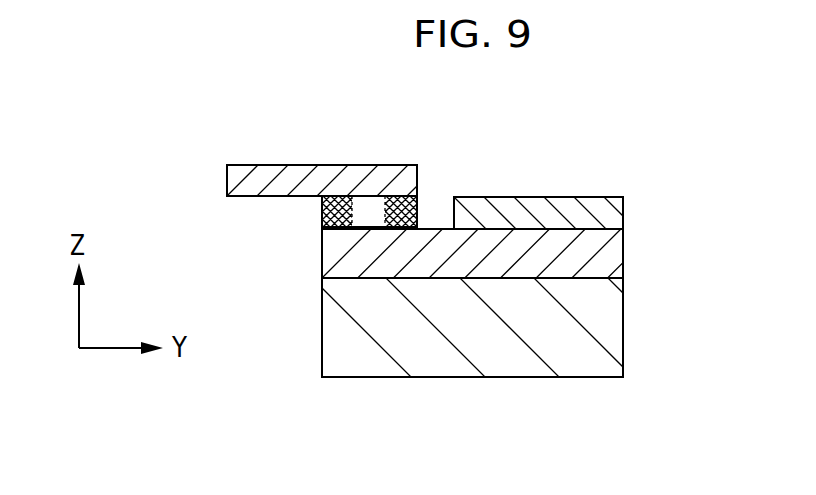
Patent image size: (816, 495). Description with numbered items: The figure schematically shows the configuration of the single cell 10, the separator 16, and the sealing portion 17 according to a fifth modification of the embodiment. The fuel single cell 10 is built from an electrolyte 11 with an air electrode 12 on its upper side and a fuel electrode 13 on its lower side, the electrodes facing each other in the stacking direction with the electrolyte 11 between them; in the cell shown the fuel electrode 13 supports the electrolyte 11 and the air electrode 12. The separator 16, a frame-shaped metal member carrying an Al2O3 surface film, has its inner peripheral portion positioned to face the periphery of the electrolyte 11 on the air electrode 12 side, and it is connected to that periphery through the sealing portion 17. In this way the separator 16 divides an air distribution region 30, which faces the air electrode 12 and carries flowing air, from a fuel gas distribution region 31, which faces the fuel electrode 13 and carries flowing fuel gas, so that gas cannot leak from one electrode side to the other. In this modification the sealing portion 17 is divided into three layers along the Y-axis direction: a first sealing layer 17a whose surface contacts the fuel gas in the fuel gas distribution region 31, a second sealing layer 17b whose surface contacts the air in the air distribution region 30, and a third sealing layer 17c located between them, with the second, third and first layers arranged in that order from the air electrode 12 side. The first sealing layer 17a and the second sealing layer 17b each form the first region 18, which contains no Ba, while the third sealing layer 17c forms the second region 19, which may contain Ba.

The fuel single cell 10 is at (519, 287).
The electrolyte 11 is at (603, 255).
The air electrode 12 is at (603, 217).
The fuel electrode 13 is at (509, 327).
The separator 16 is at (233, 177).
The sealing portion 17 is at (348, 143).
The first sealing layer 17a is at (347, 222).
The second sealing layer 17b is at (437, 164).
The third sealing layer 17c is at (366, 217).
The first region 18 is at (366, 211).
The second region 19 is at (368, 211).
The air distribution region 30 is at (518, 173).
The fuel gas distribution region 31 is at (275, 362).